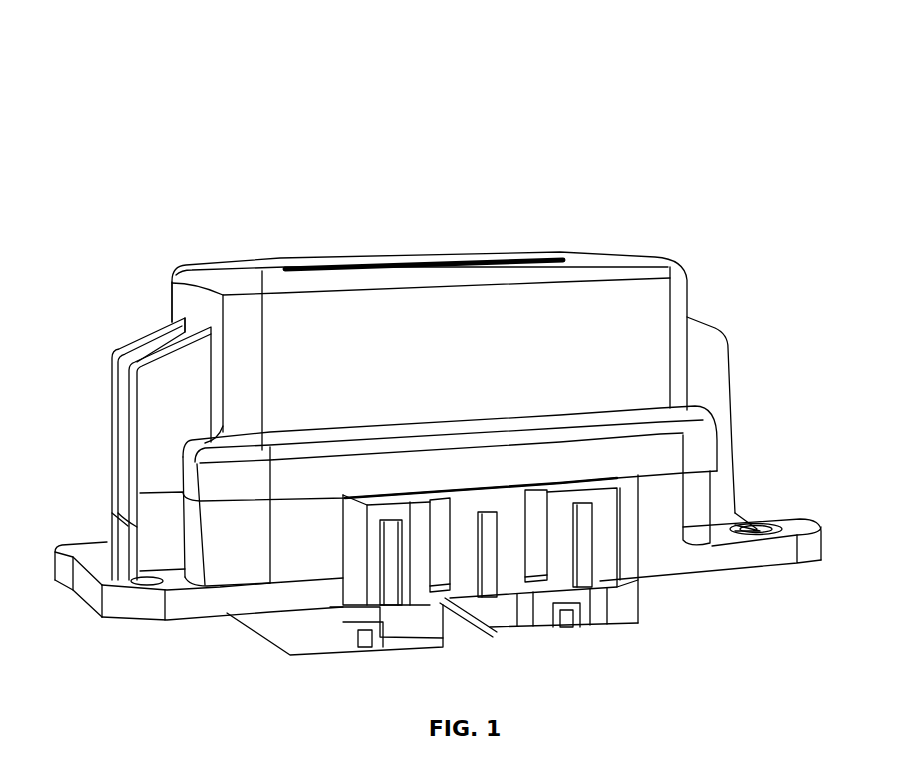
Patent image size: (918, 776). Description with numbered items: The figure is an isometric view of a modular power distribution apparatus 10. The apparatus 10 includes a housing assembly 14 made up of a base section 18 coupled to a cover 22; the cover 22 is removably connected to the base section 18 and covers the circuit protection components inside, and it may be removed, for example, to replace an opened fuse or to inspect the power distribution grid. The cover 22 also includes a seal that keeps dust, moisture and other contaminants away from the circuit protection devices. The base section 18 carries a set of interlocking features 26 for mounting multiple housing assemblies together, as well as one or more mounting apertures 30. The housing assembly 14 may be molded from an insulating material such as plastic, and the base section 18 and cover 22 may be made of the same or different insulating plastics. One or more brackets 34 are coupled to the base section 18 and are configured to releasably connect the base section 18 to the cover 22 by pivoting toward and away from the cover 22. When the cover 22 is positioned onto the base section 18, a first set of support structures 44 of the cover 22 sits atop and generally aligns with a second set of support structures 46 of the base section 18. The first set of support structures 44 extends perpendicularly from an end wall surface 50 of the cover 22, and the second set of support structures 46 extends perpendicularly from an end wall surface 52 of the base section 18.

The apparatus 10 is at (173, 80).
The housing assembly 14 is at (699, 234).
The base section 18 is at (707, 563).
The cover 22 is at (453, 257).
The interlocking features 26 is at (468, 586).
The mounting apertures 30 is at (773, 525).
The brackets 34 is at (118, 371).
The first set of support structures 44 is at (104, 401).
The second set of support structures 46 is at (101, 531).
The end wall surface 50 is at (172, 292).
The end wall surface 52 is at (196, 515).